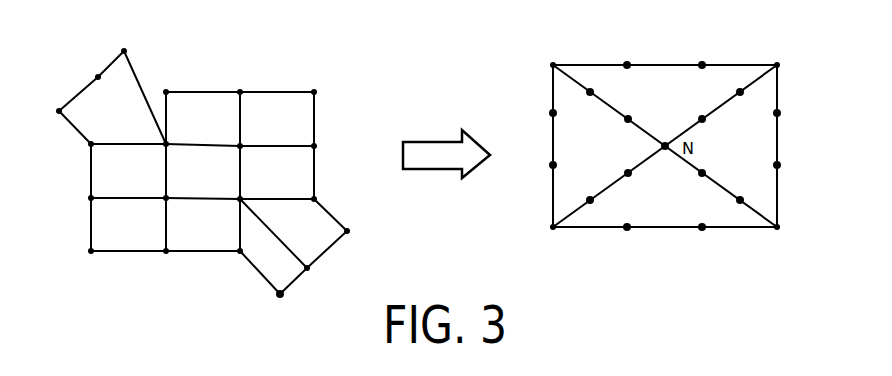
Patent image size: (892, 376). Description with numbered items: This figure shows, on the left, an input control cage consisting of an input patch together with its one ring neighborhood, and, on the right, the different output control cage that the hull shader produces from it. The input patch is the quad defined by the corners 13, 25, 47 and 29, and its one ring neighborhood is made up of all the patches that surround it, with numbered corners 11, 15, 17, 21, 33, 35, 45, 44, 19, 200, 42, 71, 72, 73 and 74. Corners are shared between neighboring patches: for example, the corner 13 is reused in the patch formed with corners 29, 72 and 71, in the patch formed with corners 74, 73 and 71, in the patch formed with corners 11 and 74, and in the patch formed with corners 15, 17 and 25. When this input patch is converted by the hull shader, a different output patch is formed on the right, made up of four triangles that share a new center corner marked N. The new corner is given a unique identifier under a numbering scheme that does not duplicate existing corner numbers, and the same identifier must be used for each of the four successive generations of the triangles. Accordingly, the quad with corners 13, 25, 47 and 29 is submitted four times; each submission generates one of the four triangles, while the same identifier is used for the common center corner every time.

The corner 11 is at (124, 40).
The corner 74 is at (81, 68).
The corner 73 is at (42, 115).
The corner 71 is at (75, 152).
The corner 72 is at (75, 195).
The corner 42 is at (75, 266).
The corner 200 is at (159, 266).
The corner 15 is at (176, 80).
The corner 17 is at (239, 80).
The corner 21 is at (328, 84).
The corner 33 is at (328, 138).
The corner 35 is at (331, 198).
The corner 19 is at (231, 268).
The corner 44 is at (321, 279).
The corner 45 is at (361, 241).
The corner 13 is at (346, 109).
The corner 25 is at (521, 97).
The corner 29 is at (343, 223).
The corner 47 is at (520, 213).